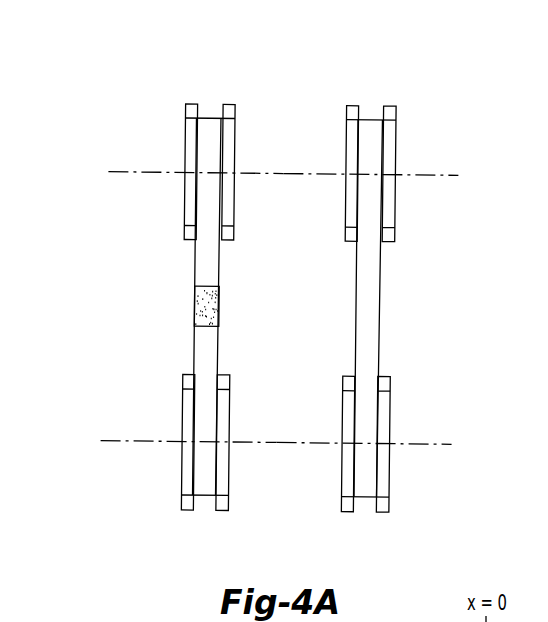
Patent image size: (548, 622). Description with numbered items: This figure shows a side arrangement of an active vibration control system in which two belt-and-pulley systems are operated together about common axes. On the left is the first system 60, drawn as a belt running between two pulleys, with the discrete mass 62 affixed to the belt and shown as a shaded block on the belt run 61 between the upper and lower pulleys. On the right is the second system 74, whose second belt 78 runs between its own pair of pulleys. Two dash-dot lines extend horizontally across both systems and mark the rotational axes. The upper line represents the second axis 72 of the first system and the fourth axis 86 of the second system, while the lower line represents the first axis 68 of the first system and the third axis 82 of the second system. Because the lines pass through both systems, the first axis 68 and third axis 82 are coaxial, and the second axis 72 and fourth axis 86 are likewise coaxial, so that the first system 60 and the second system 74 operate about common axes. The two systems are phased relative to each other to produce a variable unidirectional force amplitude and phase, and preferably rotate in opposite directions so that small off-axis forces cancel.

The first system 60 is at (201, 257).
The web portion of first member 61 is at (195, 340).
The discrete mass 62 is at (220, 302).
The second system 74 is at (400, 259).
The second belt 78 is at (373, 312).
The second axis 72 is at (125, 172).
The fourth axis 86 is at (442, 175).
The first axis 68 is at (118, 440).
The third axis 82 is at (438, 445).